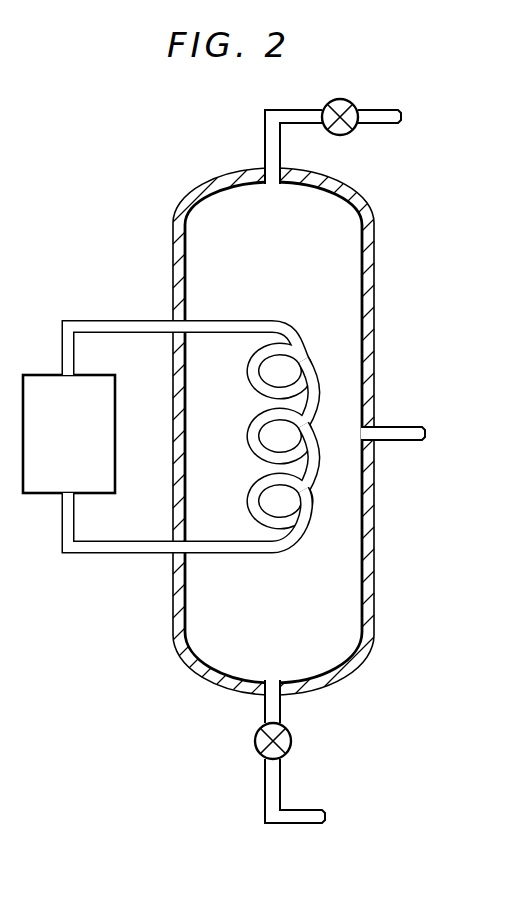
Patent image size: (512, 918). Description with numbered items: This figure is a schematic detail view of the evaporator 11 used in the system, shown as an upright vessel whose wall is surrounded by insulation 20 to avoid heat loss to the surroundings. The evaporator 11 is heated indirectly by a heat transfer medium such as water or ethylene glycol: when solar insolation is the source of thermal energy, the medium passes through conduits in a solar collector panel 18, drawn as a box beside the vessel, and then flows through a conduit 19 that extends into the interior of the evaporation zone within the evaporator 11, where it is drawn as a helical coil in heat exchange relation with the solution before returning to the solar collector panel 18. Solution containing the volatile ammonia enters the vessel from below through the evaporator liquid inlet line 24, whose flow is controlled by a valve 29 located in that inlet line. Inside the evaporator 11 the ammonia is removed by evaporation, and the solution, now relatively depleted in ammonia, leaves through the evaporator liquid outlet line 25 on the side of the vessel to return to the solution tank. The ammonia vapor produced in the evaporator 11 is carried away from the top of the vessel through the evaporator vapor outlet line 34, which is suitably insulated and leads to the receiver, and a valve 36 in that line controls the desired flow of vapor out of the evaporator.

The evaporator 11 is at (384, 195).
The solar collector panel 18 is at (57, 452).
The conduit 19 is at (311, 522).
The insulation 20 is at (375, 280).
The evaporator liquid inlet line 24 is at (303, 812).
The evaporator liquid outlet line 25 is at (408, 437).
The valve 29 is at (293, 742).
The evaporator vapor outlet line 34 is at (387, 111).
The valve 36 is at (339, 99).